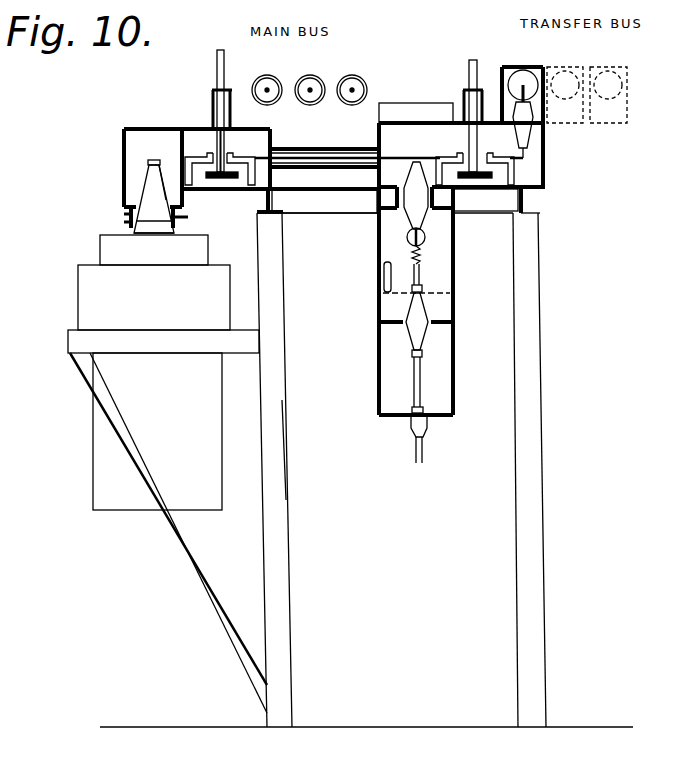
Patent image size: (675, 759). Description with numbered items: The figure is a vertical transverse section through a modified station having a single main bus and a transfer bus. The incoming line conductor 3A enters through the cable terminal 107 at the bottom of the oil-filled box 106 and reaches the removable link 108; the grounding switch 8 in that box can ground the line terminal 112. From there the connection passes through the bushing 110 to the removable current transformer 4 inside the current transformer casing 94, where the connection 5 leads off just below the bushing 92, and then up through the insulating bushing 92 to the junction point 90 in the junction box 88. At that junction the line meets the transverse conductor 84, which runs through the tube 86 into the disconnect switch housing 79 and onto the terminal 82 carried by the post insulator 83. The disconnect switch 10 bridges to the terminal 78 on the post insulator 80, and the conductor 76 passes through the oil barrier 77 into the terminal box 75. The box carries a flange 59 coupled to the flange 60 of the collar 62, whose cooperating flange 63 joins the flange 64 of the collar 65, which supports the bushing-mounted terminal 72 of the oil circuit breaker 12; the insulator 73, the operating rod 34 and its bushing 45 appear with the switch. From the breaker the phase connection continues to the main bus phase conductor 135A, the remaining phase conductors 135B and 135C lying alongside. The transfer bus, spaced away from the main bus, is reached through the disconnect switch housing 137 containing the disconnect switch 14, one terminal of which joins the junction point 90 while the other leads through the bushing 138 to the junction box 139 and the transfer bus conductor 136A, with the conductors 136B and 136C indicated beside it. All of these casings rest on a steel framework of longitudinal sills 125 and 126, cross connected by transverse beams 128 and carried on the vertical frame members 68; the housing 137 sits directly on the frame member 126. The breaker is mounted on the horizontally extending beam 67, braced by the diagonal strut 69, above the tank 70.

The incoming line conductor 3A is at (423, 459).
The current transformer 4 is at (420, 262).
The connection 5 is at (427, 239).
The grounding switch 8 is at (383, 272).
The disconnect switch 10 is at (194, 111).
The oil circuit breaker 12 is at (84, 300).
The disconnect switch 14 is at (455, 93).
The operating rod 34 is at (219, 56).
The bushing 45 is at (212, 95).
The flange 59 is at (121, 199).
The flange 60 is at (122, 207).
The collar 62 is at (186, 218).
The flange 63 is at (127, 214).
The flange 64 is at (126, 222).
The collar 65 is at (134, 229).
The horizontally extending beam 67 is at (70, 341).
The vertical frame member 68 is at (286, 472).
The diagonal strut 69 is at (195, 560).
The transformer tank 70 is at (103, 480).
The terminal 72 is at (151, 161).
The insulator 73 is at (148, 171).
The terminal box 75 is at (122, 131).
The conductor 76 is at (167, 163).
The oil barrier 77 is at (186, 128).
The terminal 78 is at (200, 158).
The disconnect switch housing 79 is at (245, 128).
The post insulator 80 is at (203, 196).
The terminal 82 is at (247, 160).
The post insulator 83 is at (247, 196).
The conductor 84 is at (327, 157).
The tube 86 is at (300, 149).
The junction box 88 is at (379, 122).
The junction point 90 is at (412, 160).
The insulating bushing 92 is at (413, 196).
The current transformer casing 94 is at (378, 253).
The box 106 is at (453, 383).
The cable terminal 107 is at (410, 427).
The removable link 108 is at (420, 366).
The bushing 110 is at (425, 309).
The line terminal 112 is at (424, 290).
The longitudinal sill 125 is at (258, 212).
The longitudinal sill 126 is at (533, 199).
The transverse beam 128 is at (335, 214).
The bus phase conductor 135A is at (267, 88).
The main bus conductor 135B is at (310, 88).
The main bus conductor 135C is at (352, 88).
The transfer bus conductor 136A is at (523, 72).
The transfer bus conductor 136B is at (566, 86).
The transfer bus conductor 136C is at (609, 86).
The disconnect switch housing 137 is at (546, 164).
The bushing 138 is at (530, 132).
The junction box 139 is at (501, 68).